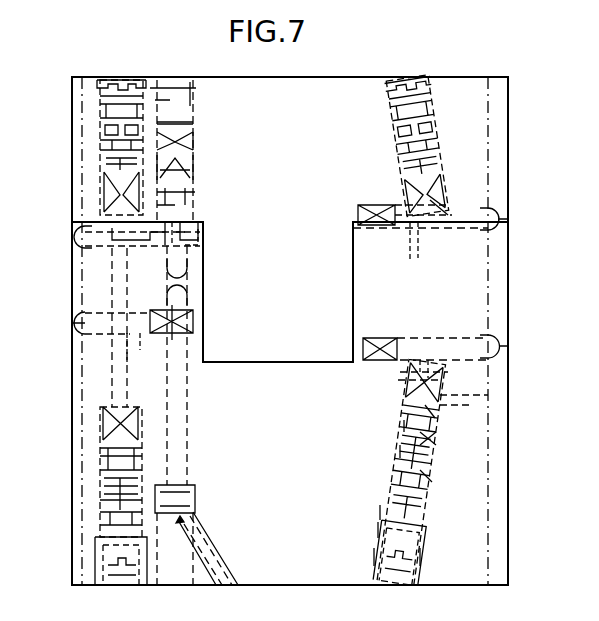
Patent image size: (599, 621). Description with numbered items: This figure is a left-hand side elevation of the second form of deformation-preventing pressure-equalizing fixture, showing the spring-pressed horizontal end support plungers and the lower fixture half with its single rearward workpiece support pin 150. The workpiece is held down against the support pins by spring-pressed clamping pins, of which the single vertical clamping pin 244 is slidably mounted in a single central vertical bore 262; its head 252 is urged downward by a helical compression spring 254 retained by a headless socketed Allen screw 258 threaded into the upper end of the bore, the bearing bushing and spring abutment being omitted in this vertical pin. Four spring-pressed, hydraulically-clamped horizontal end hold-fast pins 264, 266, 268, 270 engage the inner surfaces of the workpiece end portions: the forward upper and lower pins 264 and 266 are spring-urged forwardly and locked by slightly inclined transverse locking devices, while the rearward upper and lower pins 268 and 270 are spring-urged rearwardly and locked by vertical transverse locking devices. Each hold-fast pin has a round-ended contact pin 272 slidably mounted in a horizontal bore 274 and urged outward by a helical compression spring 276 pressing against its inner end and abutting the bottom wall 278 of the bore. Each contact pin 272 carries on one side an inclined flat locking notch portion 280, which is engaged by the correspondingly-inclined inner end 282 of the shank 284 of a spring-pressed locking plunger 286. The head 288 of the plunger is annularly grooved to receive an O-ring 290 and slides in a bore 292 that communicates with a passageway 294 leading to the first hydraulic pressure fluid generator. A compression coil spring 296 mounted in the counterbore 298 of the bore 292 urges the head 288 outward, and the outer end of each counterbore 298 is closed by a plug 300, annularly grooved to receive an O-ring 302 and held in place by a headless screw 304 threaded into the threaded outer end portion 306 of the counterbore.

The rearward workpiece support pin 150 is at (178, 434).
The vertical clamping pin 244 is at (195, 224).
The head 252 is at (195, 196).
The helical compression spring 254 is at (197, 143).
The Allen screw 258 is at (196, 98).
The central vertical bore 262 is at (192, 163).
The forward upper end hold-fast pin 264 is at (445, 212).
The forward lower end hold-fast pin 266 is at (440, 360).
The rearward upper end hold-fast pin 268 is at (110, 228).
The rearward lower end hold-fast pin 270 is at (115, 335).
The contact pin 272 is at (504, 221).
The horizontal bore 274 is at (382, 232).
The helical compression spring 276 is at (376, 202).
The bottom wall 278 is at (360, 210).
The inclined flat locking notch portion 280 is at (428, 248).
The inner end of shank 282 is at (150, 336).
The shank 284 is at (112, 375).
The locking plunger 286 is at (432, 410).
The head 288 is at (400, 451).
The O-ring 290 is at (432, 478).
The bore 292 is at (470, 405).
The passageway 294 is at (105, 150).
The compression coil spring 296 is at (433, 440).
The counterbore 298 is at (404, 426).
The plug 300 is at (380, 529).
The O-ring 302 is at (380, 512).
The headless screw 304 is at (374, 556).
The threaded outer end portion 306 is at (420, 556).